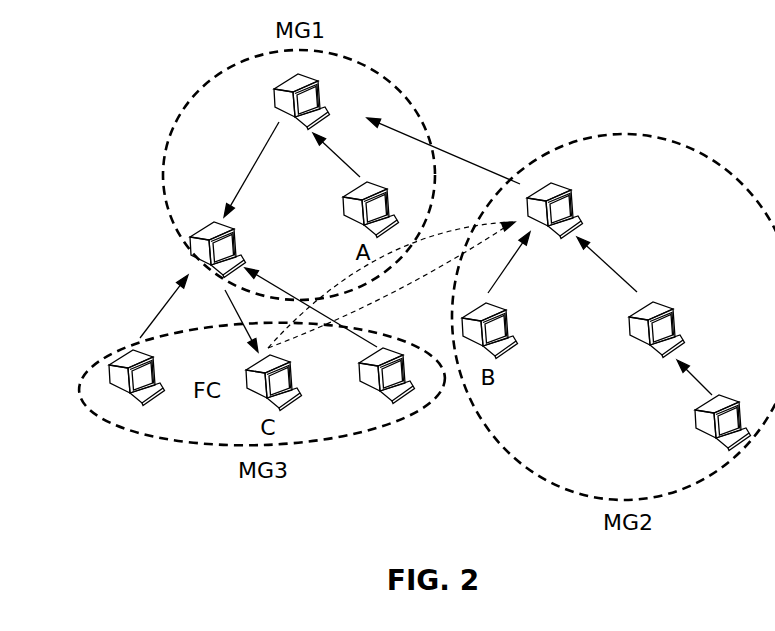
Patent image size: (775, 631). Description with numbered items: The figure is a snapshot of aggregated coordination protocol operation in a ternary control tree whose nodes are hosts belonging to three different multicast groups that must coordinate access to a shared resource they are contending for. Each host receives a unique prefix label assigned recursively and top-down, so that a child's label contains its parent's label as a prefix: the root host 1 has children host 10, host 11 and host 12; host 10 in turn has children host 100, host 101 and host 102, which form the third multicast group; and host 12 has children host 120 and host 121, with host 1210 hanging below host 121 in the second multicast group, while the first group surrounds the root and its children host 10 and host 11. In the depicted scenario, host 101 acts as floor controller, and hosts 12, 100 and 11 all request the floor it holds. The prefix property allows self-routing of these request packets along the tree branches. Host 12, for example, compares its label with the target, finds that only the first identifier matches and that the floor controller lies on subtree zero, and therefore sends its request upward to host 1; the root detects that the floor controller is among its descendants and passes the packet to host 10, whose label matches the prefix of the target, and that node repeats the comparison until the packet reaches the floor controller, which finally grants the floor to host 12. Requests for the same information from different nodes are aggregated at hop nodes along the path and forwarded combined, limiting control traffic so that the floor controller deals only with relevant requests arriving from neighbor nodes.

The root host 1 is at (306, 101).
The host 10 is at (227, 247).
The host 11 is at (377, 201).
The host 12 is at (560, 201).
The host 120 is at (506, 323).
The host 121 is at (670, 320).
The host 1210 is at (734, 410).
The host 100 is at (153, 375).
The floor controller host 101 is at (292, 377).
The host 102 is at (374, 386).